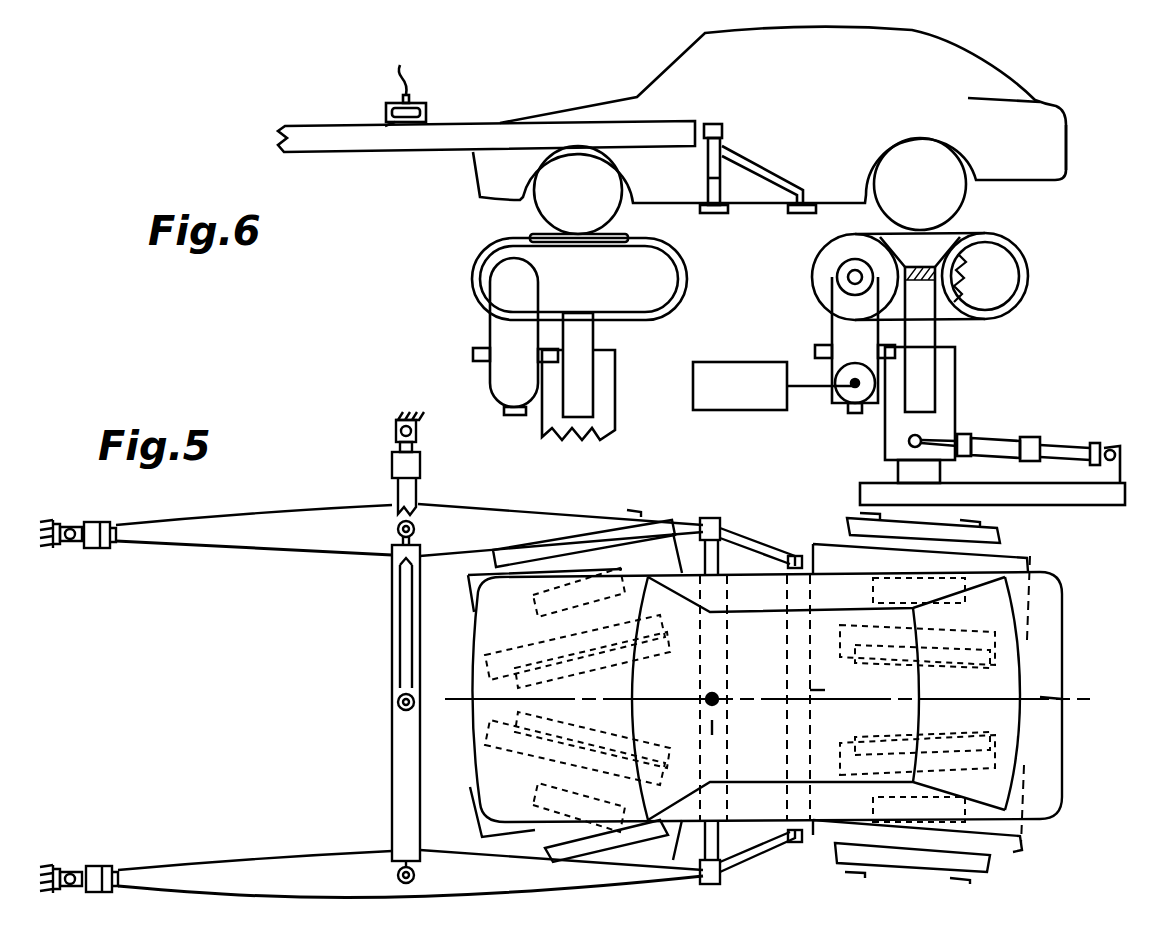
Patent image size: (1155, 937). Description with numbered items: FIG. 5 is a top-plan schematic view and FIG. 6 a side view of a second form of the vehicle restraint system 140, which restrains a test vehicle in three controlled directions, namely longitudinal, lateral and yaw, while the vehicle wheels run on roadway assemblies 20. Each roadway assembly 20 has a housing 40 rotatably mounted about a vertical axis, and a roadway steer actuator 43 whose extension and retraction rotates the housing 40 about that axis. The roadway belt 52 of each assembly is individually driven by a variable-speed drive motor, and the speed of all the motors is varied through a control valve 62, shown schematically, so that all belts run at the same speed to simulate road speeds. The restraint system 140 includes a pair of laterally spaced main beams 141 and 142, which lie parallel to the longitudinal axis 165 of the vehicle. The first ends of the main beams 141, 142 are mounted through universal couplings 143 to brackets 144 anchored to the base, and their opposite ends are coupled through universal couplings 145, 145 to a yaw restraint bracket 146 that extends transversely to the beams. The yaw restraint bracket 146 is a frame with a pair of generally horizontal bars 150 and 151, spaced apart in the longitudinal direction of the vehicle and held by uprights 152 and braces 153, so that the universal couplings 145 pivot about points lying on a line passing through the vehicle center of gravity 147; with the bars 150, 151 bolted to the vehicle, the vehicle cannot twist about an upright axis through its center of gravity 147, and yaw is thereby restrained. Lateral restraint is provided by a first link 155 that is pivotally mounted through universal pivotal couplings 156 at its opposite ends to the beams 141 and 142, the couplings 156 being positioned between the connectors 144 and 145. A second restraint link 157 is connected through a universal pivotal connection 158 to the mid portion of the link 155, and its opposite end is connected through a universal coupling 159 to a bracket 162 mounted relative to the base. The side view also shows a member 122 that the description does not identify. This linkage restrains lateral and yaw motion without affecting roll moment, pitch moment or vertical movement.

In FIG. 6, the roadway assembly 20 is at (470, 252).
In FIG. 6, the housing 40 is at (955, 386).
In FIG. 6, the roadway steer actuator 43 is at (995, 440).
In FIG. 6, the roadway belt 52 is at (960, 235).
In FIG. 6, the control valve 62 is at (736, 362).
In FIG. 6, the platform 122 is at (535, 132).
In FIG. 5, the restraint system 140 is at (532, 509).
In FIG. 5, the main beam 141 is at (325, 532).
In FIG. 5, the main beam 142 is at (272, 862).
In FIG. 5, the universal coupling 143 is at (84, 525).
In FIG. 5, the bracket 144 is at (52, 522).
In FIG. 6, the universal coupling 145 is at (722, 130).
In FIG. 5, the universal coupling 145 is at (706, 518).
In FIG. 5, the yaw restraint bracket 146 is at (752, 537).
In FIG. 5, the center of gravity 147 is at (716, 699).
In FIG. 6, the horizontal bar 150 is at (712, 213).
In FIG. 5, the horizontal bar 150 is at (720, 727).
In FIG. 6, the horizontal bar 151 is at (800, 213).
In FIG. 6, the upright 152 is at (707, 178).
In FIG. 6, the brace 153 is at (765, 158).
In FIG. 6, the first link 155 is at (426, 105).
In FIG. 5, the first link 155 is at (392, 753).
In FIG. 6, the universal pivotal coupling 156 is at (385, 128).
In FIG. 5, the universal pivotal coupling 156 is at (414, 876).
In FIG. 5, the second restraint link 157 is at (410, 500).
In FIG. 6, the universal pivotal connection 158 is at (376, 77).
In FIG. 5, the universal pivotal connection 158 is at (398, 702).
In FIG. 5, the universal coupling 159 is at (395, 432).
In FIG. 5, the bracket 162 is at (397, 421).
In FIG. 5, the longitudinal axis 165 is at (1048, 700).